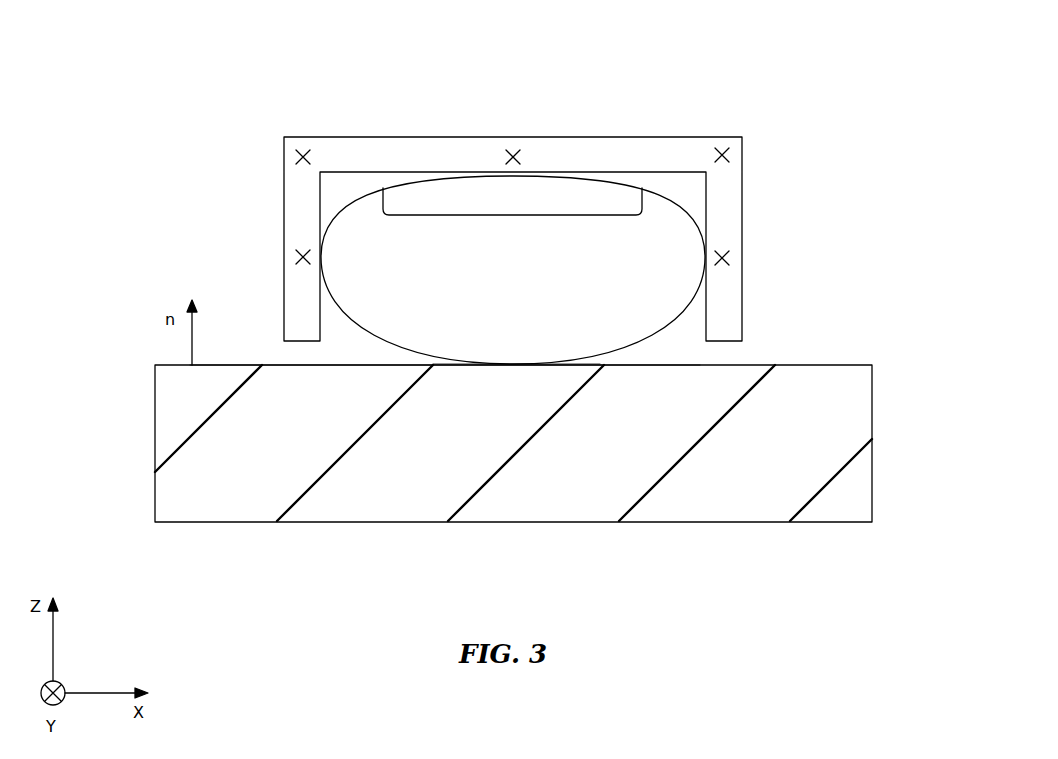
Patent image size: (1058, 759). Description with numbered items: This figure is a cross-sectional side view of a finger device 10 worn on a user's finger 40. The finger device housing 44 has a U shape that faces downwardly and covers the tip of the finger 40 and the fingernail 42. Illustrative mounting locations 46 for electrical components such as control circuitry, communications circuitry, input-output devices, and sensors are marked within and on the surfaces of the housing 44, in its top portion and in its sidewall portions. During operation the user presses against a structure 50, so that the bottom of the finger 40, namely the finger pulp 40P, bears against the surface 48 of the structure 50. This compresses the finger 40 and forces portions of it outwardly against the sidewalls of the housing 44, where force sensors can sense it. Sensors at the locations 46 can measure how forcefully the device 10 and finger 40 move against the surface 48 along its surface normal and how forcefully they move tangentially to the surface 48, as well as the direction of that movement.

The finger device 10 is at (699, 90).
The user finger 40 is at (472, 285).
The finger pulp 40P is at (517, 350).
The fingernail 42 is at (579, 190).
The finger device housing 44 is at (743, 197).
The mounting locations 46 is at (305, 148).
The surface 48 is at (817, 364).
The structure 50 is at (873, 423).